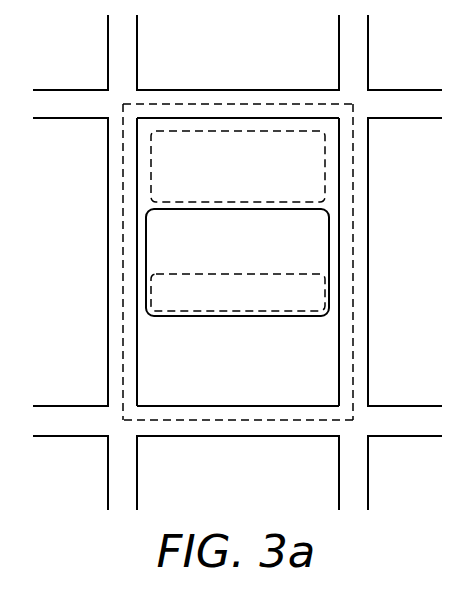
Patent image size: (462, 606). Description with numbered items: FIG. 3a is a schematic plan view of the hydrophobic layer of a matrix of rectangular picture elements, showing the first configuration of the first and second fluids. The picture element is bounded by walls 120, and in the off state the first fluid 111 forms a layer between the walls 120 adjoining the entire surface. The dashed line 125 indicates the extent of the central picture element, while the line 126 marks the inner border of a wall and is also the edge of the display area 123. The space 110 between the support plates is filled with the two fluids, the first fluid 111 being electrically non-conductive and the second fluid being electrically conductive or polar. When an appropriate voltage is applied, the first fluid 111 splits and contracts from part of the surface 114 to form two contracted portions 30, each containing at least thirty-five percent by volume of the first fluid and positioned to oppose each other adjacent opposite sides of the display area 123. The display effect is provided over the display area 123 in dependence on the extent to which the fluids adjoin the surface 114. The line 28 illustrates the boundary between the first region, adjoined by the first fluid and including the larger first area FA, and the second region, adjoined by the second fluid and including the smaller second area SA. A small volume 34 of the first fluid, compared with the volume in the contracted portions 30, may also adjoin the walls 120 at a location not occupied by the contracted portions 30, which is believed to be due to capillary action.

The walls 120 is at (236, 113).
The first fluid 111 is at (152, 133).
The contracted portions 30 is at (336, 138).
The inner border of wall 126 is at (340, 191).
The space between the support plates 110 is at (160, 230).
The small volume of first fluid 34 is at (140, 261).
The boundary line 28 is at (332, 287).
The dashed line indicating extent of picture element 125 is at (122, 292).
The display area 123 is at (150, 345).
The surface 114 is at (312, 349).